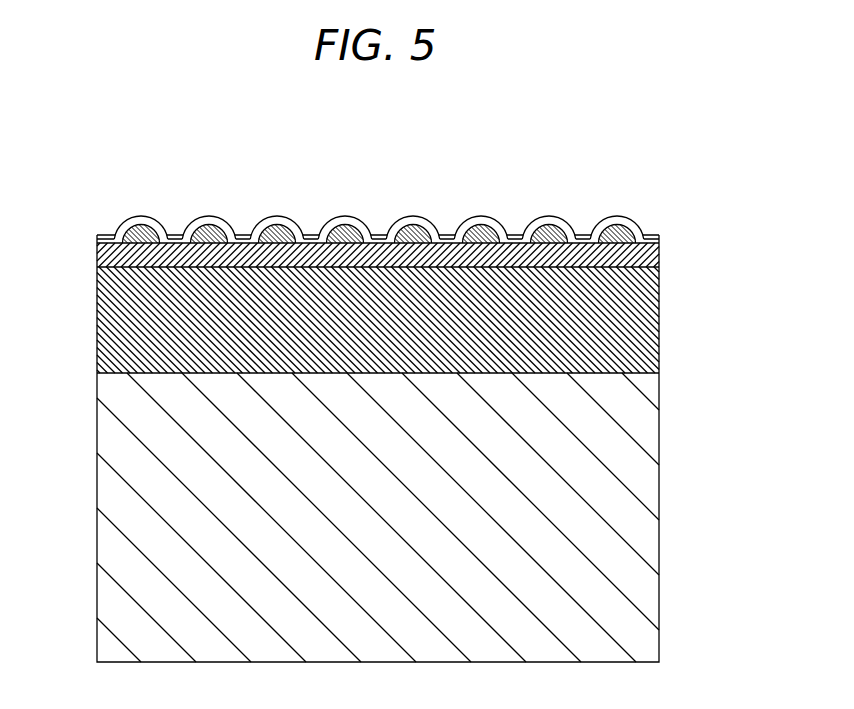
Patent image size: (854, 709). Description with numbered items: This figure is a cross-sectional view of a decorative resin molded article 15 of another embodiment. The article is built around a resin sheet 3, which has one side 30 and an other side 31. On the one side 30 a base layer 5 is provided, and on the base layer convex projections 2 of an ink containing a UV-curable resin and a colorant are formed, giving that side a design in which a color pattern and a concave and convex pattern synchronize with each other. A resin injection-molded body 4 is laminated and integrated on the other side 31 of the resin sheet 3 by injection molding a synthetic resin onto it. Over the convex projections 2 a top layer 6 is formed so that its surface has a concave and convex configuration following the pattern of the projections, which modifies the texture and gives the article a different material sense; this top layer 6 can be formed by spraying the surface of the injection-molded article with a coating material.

The convex projections 2 is at (510, 227).
The resin sheet 3 is at (659, 332).
The resin injection-molded body 4 is at (650, 528).
The base layer 5 is at (659, 257).
The top layer 6 is at (643, 235).
The decorative resin molded article 15 is at (386, 197).
The one side 30 is at (120, 265).
The other side 31 is at (142, 374).